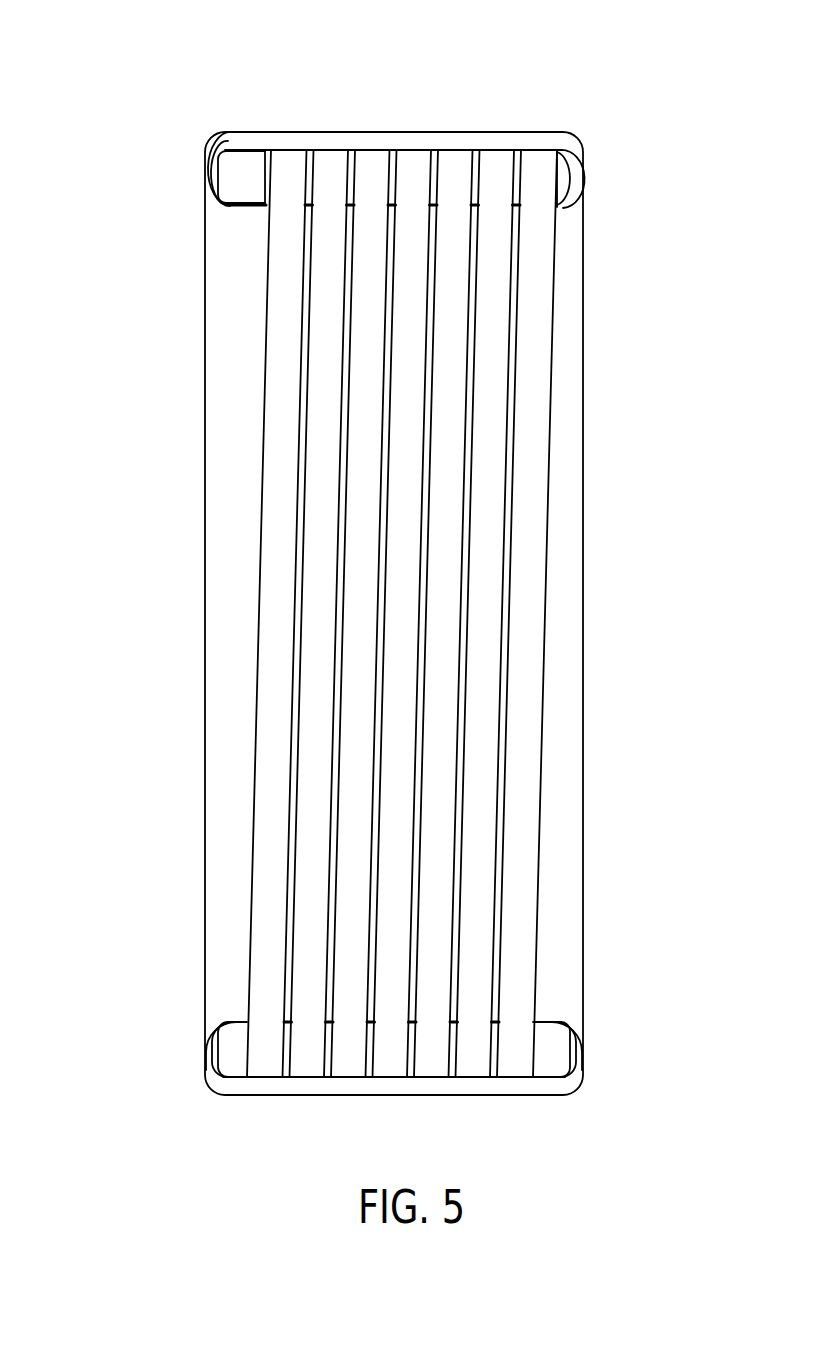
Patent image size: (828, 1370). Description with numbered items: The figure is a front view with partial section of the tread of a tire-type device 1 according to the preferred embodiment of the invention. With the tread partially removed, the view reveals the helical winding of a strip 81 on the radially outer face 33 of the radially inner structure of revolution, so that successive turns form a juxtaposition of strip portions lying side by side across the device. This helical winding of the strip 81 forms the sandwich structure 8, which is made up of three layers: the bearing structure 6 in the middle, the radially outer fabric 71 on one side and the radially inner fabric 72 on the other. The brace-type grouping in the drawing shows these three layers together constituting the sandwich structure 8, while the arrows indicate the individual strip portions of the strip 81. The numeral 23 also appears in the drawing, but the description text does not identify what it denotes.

The tire-type device 1 is at (155, 80).
The header 23 is at (420, 133).
The sandwich structure 8 is at (112, 137).
The radially outer fabric 71 is at (233, 136).
The bearing structure 6 is at (229, 177).
The radially inner fabric 72 is at (234, 211).
The radially outer face 33 is at (576, 219).
The strip 81 is at (504, 557).